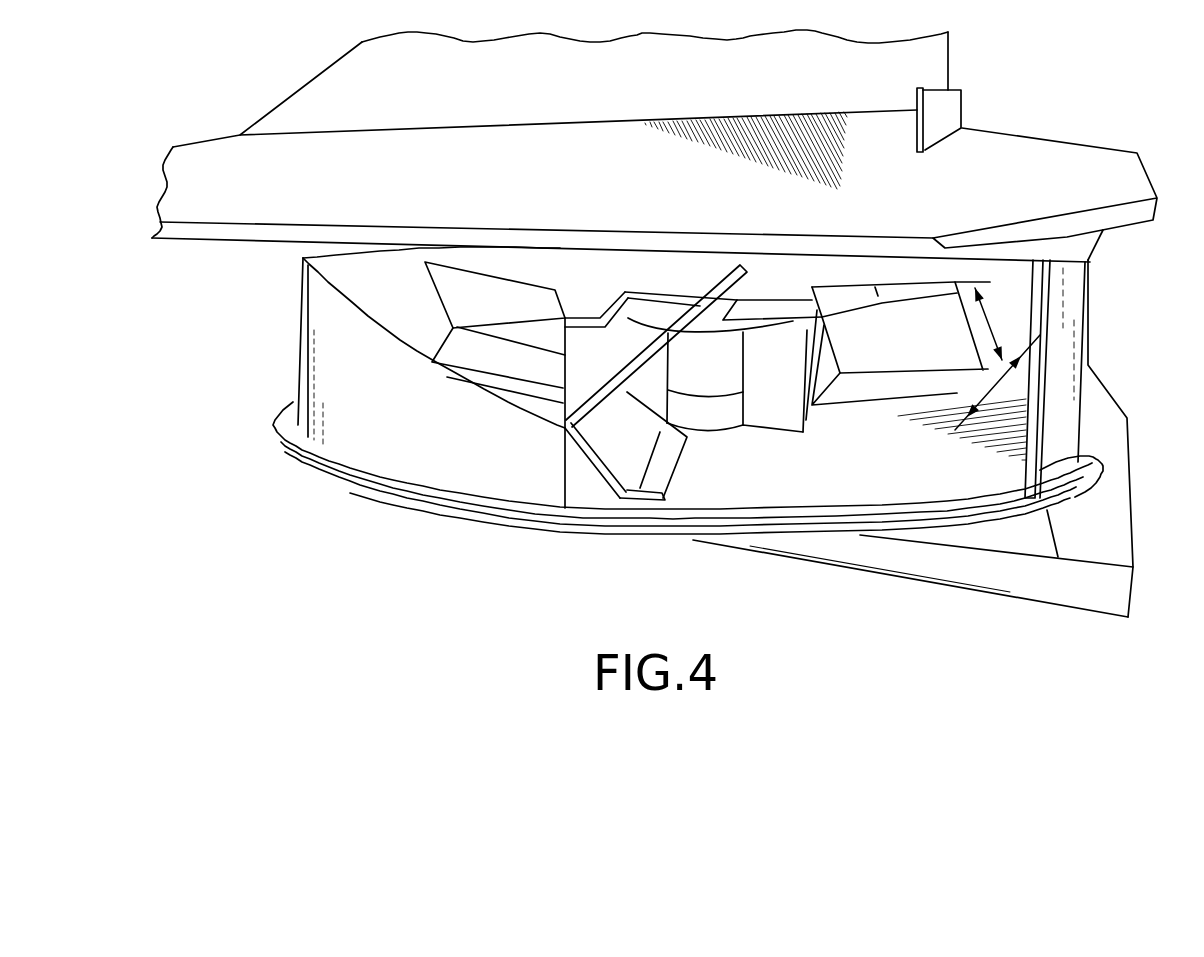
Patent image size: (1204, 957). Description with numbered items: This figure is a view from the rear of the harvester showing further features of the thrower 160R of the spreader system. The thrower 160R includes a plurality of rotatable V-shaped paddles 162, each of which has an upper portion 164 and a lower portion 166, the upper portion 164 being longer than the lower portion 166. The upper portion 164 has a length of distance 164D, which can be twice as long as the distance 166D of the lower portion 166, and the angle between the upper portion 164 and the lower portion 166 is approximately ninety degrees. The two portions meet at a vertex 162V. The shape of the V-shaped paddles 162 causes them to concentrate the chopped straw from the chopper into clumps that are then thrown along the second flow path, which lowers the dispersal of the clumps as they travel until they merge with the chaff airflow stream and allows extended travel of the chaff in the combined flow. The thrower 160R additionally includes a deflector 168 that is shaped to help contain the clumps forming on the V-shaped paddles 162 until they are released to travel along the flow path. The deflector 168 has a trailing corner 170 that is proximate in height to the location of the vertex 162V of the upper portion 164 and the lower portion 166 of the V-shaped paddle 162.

The thrower 160R is at (609, 186).
The V-shaped paddle 162 is at (920, 444).
The vertex 162V is at (452, 327).
The upper portion 164 is at (634, 373).
The distance 164D is at (990, 325).
The lower portion 166 is at (637, 443).
The distance 166D is at (1003, 388).
The deflector 168 is at (402, 437).
The trailing corner 170 is at (563, 428).